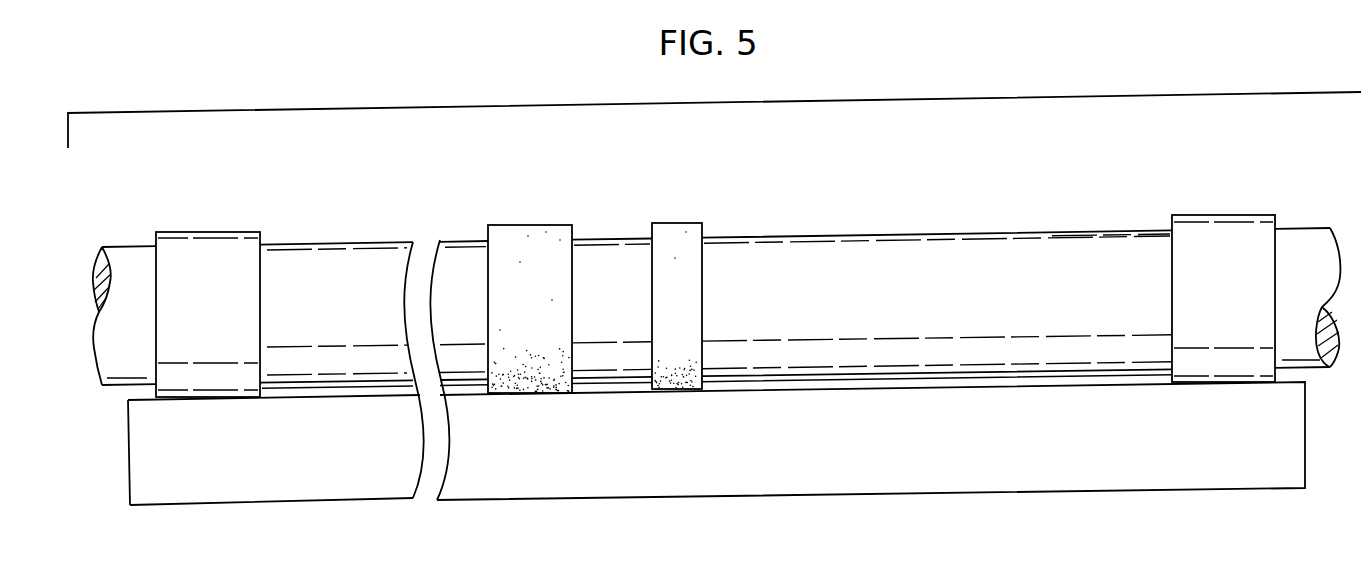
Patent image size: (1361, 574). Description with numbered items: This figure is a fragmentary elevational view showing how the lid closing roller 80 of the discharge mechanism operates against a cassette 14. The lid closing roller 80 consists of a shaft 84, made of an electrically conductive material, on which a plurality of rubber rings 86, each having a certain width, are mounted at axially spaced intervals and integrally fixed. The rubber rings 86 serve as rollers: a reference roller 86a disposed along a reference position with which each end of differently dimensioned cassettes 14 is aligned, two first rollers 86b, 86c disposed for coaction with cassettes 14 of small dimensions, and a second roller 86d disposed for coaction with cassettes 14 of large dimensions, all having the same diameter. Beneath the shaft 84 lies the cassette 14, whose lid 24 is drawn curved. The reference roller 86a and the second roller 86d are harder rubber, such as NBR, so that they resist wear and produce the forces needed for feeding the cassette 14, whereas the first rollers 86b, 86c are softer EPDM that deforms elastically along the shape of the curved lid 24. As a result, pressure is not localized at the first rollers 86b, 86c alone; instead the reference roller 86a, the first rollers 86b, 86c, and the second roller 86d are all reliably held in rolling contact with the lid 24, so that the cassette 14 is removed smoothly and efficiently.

The cassette 14 is at (1073, 475).
The lid 24 is at (773, 386).
The lid closing roller 80 is at (717, 255).
The shaft 84 is at (886, 252).
The rubber rings 86 is at (715, 258).
The reference roller 86a is at (1207, 230).
The first roller 86b is at (677, 233).
The first roller 86c is at (528, 237).
The second roller 86d is at (193, 243).